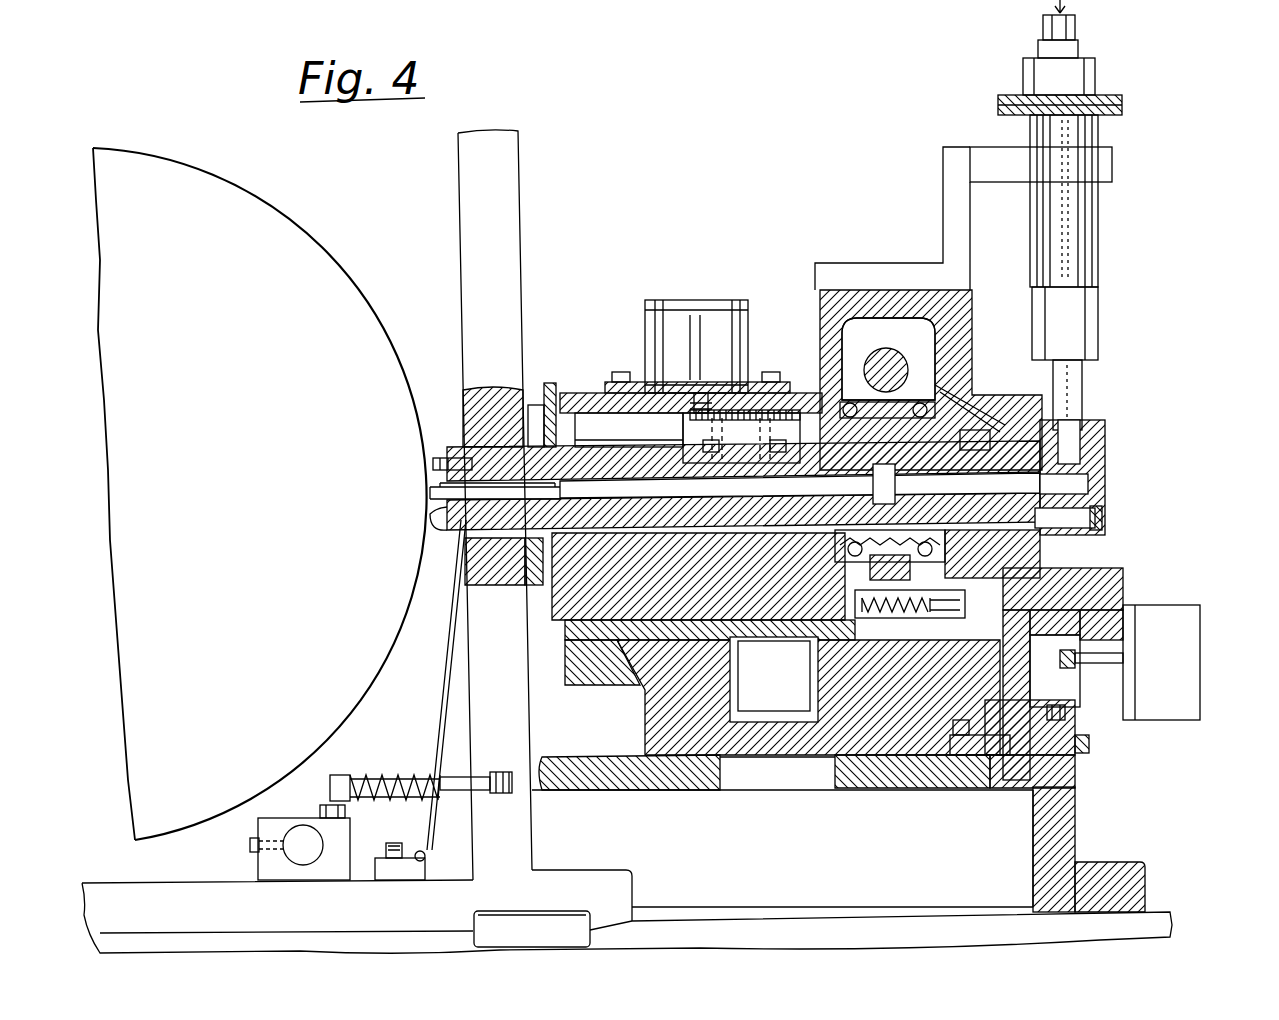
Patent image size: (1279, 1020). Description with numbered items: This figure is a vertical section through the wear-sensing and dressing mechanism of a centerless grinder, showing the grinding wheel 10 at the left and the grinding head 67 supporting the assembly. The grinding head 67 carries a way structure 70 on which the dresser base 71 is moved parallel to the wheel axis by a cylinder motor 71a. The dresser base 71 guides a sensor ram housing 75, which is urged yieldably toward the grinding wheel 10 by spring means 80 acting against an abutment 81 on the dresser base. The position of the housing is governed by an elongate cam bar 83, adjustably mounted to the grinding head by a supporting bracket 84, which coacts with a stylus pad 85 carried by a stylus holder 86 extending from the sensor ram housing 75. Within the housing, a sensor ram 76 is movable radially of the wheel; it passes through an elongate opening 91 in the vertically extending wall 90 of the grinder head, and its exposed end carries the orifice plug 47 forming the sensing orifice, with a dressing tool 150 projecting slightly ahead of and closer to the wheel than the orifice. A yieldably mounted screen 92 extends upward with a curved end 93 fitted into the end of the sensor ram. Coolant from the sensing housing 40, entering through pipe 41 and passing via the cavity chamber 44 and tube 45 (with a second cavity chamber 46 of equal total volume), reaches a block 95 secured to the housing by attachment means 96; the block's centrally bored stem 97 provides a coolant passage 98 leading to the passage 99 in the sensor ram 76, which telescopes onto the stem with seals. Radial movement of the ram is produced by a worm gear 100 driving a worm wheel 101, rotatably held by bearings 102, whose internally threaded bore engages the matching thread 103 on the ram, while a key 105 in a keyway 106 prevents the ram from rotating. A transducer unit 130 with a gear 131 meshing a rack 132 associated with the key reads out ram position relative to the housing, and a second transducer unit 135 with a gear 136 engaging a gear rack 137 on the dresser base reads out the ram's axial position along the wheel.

The grinding wheel 10 is at (332, 290).
The housing 40 is at (1137, 147).
The pipe 41 is at (1066, 25).
The cavity chamber 44 is at (1086, 220).
The tube 45 is at (1085, 400).
The cavity chamber 46 is at (1098, 305).
The insert (orifice plug) 47 is at (432, 493).
The grinding head 67 is at (1090, 820).
The way structure 70 is at (665, 706).
The dresser base 71 is at (590, 667).
The cylinder motor 71a is at (790, 684).
The sensor ram housing 75 is at (800, 393).
The sensor ram 76 is at (550, 405).
The spring means 80 is at (876, 620).
The abutment 81 is at (910, 620).
The cam bar 83 is at (1050, 610).
The supporting bracket 84 is at (1055, 736).
The stylus pad 85 is at (1083, 632).
The stylus holder 86 is at (1100, 578).
The vertically extending wall 90 is at (495, 213).
The elongate opening 91 is at (462, 445).
The screen 92 is at (440, 709).
The curved end 93 is at (437, 526).
The block 95 is at (1098, 452).
The attachment means 96 is at (1100, 517).
The stem 97 is at (800, 484).
The coolant passage 98 is at (1060, 482).
The passage 99 is at (650, 495).
The worm gear 100 is at (905, 370).
The worm wheel 101 is at (885, 337).
The bearings 102 is at (940, 550).
The thread 103 is at (1005, 445).
The key 105 is at (683, 438).
The keyway 106 is at (597, 430).
The transducer unit 130 is at (683, 312).
The gear 131 is at (700, 400).
The rack 132 is at (740, 410).
The transducer unit 135 is at (1185, 617).
The gear 136 is at (1076, 660).
The gear rack 137 is at (1066, 678).
The dressing tool 150 is at (435, 462).